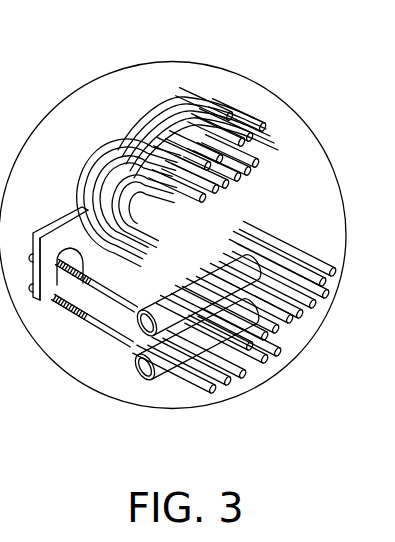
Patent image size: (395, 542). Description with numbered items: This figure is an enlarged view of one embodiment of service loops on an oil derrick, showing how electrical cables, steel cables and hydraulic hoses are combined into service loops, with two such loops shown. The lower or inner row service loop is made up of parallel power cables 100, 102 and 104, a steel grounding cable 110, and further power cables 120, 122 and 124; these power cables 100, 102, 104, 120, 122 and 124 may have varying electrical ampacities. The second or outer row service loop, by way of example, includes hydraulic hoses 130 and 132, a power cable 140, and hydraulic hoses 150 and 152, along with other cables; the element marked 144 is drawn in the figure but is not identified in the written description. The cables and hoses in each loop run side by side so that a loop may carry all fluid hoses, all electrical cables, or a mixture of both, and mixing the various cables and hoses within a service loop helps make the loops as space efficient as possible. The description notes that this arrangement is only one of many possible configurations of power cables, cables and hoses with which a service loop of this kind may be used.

The power cable 100 is at (228, 128).
The power cable 102 is at (225, 235).
The power cable 104 is at (312, 325).
The steel grounding cable 110 is at (335, 288).
The power cable 120 is at (267, 235).
The power cable 122 is at (242, 193).
The power cable 124 is at (252, 168).
The hydraulic hose 130 is at (137, 127).
The hydraulic hose 132 is at (177, 152).
The power cable 140 is at (188, 146).
The tube end 144 is at (257, 152).
The hydraulic hose 150 is at (228, 113).
The hydraulic hose 152 is at (258, 123).